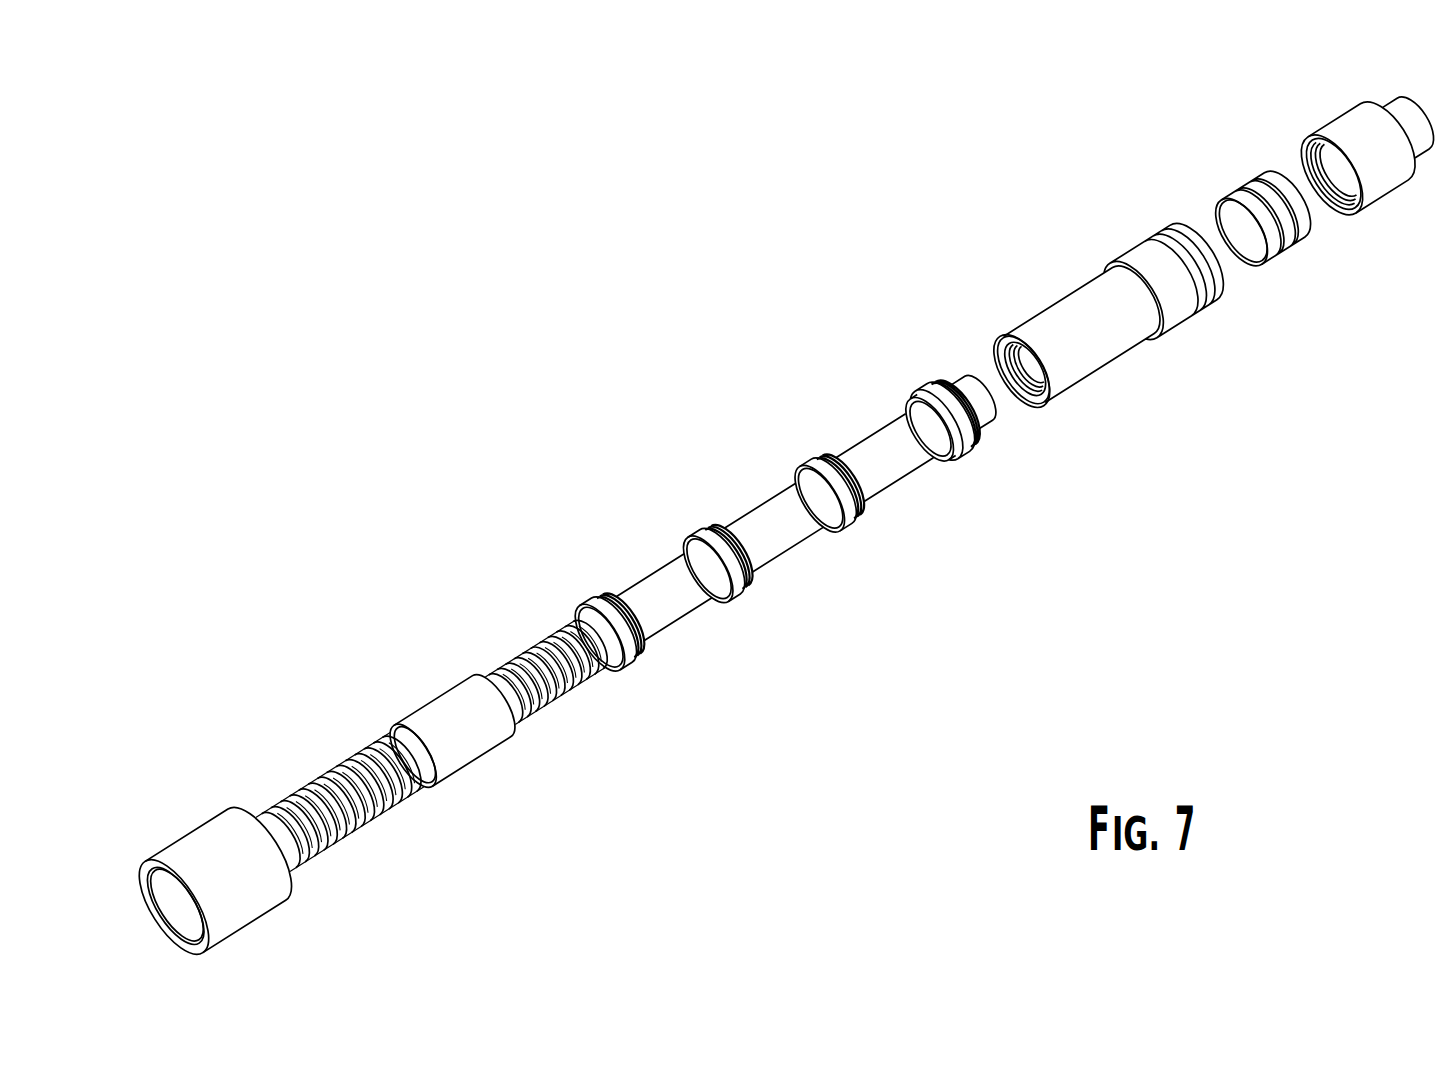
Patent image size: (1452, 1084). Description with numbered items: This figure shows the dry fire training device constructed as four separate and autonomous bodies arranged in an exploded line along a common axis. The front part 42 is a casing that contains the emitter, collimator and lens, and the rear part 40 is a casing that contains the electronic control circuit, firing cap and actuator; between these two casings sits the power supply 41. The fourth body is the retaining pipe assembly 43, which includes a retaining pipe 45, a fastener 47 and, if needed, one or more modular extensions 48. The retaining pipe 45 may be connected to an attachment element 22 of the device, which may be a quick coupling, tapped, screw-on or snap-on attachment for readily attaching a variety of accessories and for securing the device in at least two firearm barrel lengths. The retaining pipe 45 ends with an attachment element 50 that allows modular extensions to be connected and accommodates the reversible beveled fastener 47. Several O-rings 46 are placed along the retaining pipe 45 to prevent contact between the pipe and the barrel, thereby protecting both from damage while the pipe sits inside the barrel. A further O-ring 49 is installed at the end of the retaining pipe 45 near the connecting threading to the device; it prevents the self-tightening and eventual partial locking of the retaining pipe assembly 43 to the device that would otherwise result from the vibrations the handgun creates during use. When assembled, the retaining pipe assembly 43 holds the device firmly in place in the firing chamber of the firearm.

The attachment element 22 is at (1023, 397).
The rear part 40 is at (1350, 118).
The power supply 41 is at (1287, 247).
The front part 42 is at (1132, 257).
The retaining pipe assembly 43 is at (612, 708).
The retaining pipe 45 is at (762, 517).
The O-rings 46 is at (630, 668).
The fastener 47 is at (197, 842).
The modular extensions 48 is at (443, 708).
The O-ring 49 is at (960, 383).
The attachment element 50 is at (539, 647).